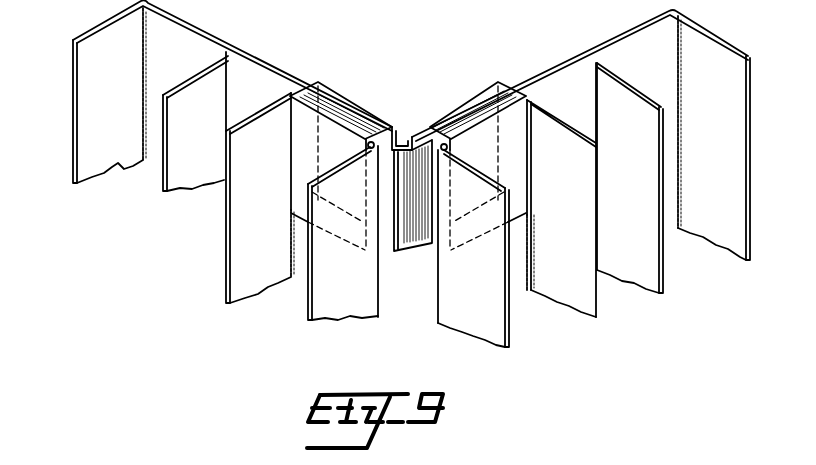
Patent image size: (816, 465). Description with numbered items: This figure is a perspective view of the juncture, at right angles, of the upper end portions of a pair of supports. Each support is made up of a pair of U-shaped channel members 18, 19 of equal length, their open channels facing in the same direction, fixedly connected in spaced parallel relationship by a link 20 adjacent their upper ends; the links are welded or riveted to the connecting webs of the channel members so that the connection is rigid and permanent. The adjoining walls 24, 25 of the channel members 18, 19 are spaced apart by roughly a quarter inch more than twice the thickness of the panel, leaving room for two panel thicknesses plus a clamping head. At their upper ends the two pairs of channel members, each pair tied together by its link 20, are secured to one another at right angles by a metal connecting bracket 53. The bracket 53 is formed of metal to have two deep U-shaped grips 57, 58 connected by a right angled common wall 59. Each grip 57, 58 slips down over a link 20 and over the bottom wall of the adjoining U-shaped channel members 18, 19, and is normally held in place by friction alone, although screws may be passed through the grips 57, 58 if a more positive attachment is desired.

The link 20 is at (237, 41).
The wall 24 is at (201, 127).
The wall 25 is at (261, 161).
The U-shaped grip 57 is at (343, 159).
The U-shaped grip 58 is at (499, 163).
The right angled common wall 59 is at (403, 141).
The connecting bracket 53 is at (393, 256).
The U-shaped channel member 18 is at (291, 295).
The U-shaped channel member 19 is at (480, 348).